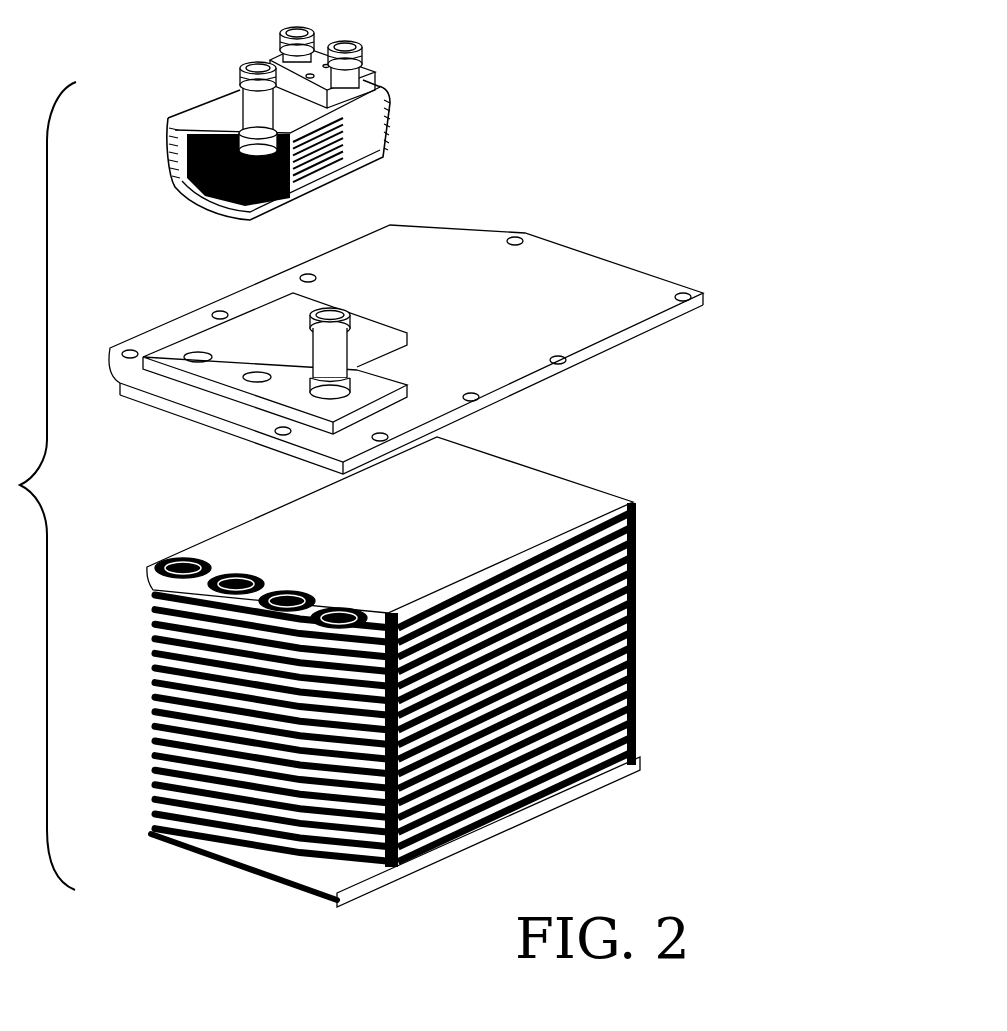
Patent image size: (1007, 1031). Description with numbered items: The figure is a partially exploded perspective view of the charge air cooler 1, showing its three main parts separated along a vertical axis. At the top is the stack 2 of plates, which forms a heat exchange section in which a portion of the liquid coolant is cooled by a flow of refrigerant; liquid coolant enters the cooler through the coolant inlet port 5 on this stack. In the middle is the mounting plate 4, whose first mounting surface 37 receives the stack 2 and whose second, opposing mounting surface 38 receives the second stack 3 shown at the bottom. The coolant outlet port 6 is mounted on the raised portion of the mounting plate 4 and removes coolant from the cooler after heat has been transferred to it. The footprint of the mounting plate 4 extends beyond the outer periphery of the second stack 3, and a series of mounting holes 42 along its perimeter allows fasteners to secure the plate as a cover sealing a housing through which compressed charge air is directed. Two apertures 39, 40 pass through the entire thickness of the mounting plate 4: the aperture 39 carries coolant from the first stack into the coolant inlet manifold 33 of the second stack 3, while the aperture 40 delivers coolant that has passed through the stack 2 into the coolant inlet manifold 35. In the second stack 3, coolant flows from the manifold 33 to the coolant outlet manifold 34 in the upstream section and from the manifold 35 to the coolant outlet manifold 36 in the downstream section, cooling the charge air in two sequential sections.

The charge air cooler 1 is at (666, 84).
The stack 2 is at (314, 123).
The second stack 3 is at (413, 672).
The mounting plate 4 is at (409, 326).
The coolant inlet port 5 is at (255, 112).
The coolant outlet port 6 is at (338, 347).
The coolant inlet manifold 33 is at (285, 600).
The coolant outlet manifold 34 is at (341, 614).
The coolant inlet manifold 35 is at (188, 572).
The coolant outlet manifold 36 is at (240, 587).
The first mounting surface 37 is at (259, 321).
The second mounting surface 38 is at (207, 422).
The aperture 39 is at (257, 375).
The aperture 40 is at (198, 355).
The mounting holes 42 is at (515, 237).